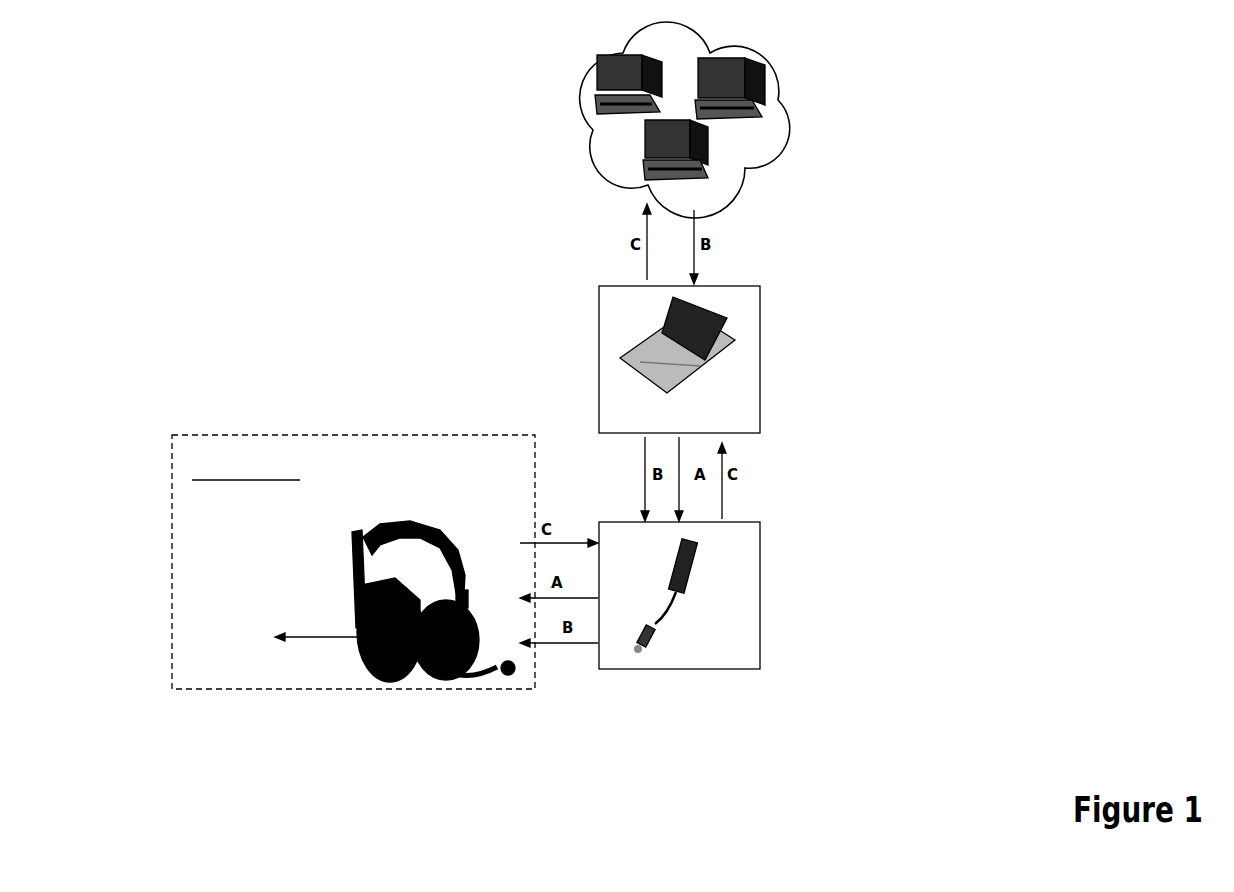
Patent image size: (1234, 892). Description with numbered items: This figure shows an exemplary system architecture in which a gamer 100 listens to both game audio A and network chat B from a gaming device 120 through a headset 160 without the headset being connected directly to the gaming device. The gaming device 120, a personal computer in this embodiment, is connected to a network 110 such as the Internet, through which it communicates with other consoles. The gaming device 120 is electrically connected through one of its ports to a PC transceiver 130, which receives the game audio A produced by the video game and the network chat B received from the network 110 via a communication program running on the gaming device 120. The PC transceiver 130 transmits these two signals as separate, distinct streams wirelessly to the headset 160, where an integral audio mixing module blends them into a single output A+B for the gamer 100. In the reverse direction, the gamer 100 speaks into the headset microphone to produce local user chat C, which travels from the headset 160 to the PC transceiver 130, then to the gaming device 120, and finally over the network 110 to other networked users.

The gamer 100 is at (273, 520).
The network 110 is at (782, 108).
The gaming device 120 is at (725, 323).
The PC transceiver 130 is at (672, 653).
The headset 160 is at (407, 522).